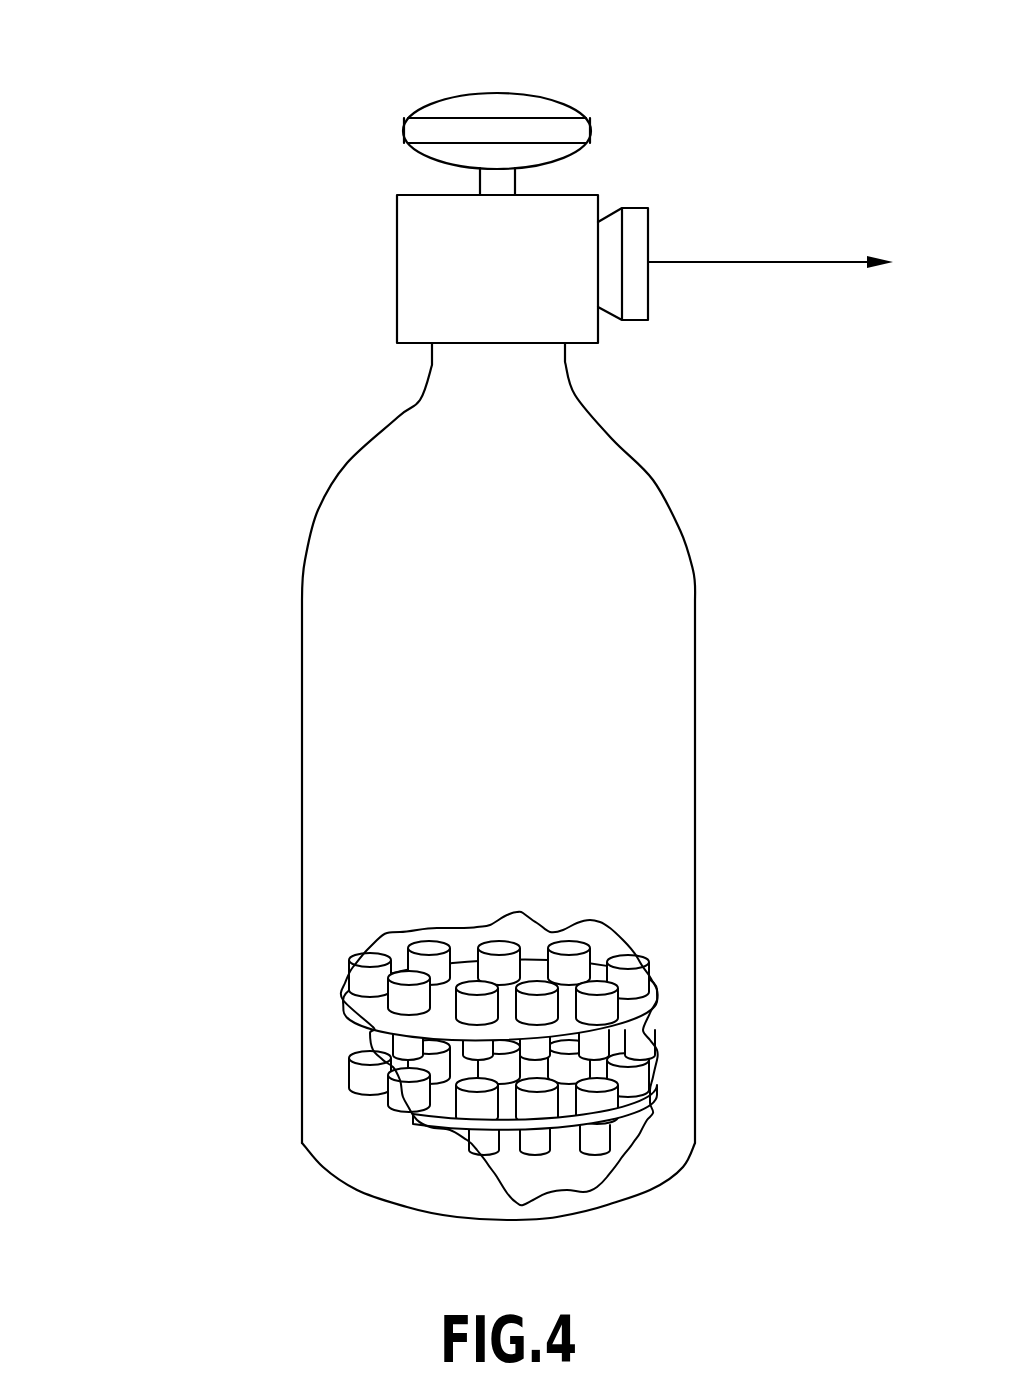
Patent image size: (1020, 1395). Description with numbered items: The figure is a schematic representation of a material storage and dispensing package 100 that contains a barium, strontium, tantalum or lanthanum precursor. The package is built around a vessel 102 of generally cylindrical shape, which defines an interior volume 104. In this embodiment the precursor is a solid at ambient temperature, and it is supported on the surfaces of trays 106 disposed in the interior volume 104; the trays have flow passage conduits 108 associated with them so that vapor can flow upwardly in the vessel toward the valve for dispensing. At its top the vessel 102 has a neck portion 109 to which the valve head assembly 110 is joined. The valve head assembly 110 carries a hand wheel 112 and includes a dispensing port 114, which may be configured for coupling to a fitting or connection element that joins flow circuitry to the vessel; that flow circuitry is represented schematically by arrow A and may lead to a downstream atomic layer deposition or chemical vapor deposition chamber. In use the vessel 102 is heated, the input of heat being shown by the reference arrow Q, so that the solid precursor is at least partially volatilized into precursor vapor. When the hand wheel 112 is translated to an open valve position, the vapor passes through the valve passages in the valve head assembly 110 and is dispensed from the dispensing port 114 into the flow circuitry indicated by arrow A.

The material storage and dispensing package 100 is at (193, 368).
The vessel 102 is at (695, 625).
The interior volume 104 is at (397, 958).
The trays 106 is at (663, 1050).
The flow passage conduits 108 is at (503, 972).
The neck portion 109 is at (573, 387).
The valve head assembly 110 is at (413, 263).
The hand wheel 112 is at (447, 95).
The dispensing port 114 is at (650, 233).
The arrow A is at (803, 262).
The reference arrow Q is at (260, 823).